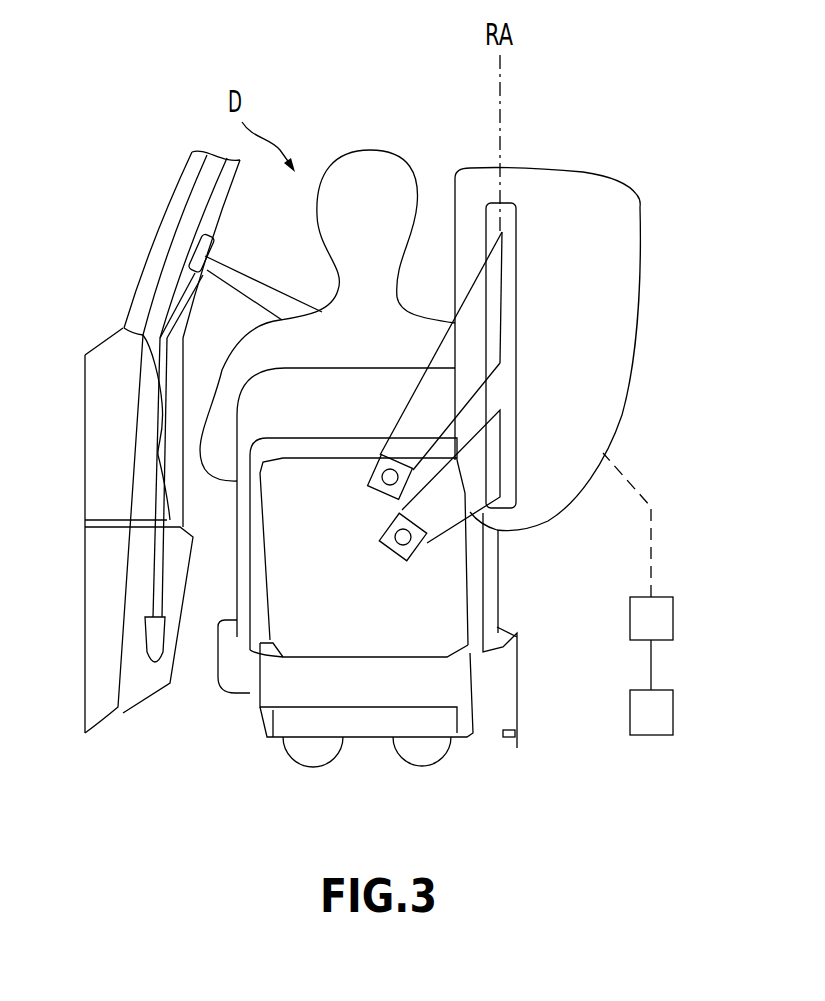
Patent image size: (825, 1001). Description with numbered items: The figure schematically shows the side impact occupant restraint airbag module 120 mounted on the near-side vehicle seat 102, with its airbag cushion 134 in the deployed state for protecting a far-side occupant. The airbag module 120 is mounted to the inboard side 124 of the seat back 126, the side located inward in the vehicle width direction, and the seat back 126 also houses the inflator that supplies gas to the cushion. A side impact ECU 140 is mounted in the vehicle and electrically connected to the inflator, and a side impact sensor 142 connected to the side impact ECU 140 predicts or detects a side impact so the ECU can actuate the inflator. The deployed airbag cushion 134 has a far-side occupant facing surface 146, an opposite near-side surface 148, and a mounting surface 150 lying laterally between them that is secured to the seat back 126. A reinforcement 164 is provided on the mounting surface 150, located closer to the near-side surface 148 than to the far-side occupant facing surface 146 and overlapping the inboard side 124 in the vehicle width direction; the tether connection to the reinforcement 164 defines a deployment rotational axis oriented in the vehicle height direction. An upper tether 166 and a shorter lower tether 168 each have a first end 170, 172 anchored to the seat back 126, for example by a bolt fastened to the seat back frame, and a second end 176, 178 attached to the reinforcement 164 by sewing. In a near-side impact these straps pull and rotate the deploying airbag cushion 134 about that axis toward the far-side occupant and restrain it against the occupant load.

The near-side vehicle seat 102 is at (360, 766).
The airbag module 120 is at (589, 133).
The inboard side 124 is at (498, 570).
The seat back 126 is at (307, 628).
The airbag cushion 134 is at (623, 350).
The side impact ECU 140 is at (673, 617).
The side impact sensor 142 is at (673, 713).
The far-side occupant facing surface 146 is at (640, 273).
The near-side surface 148 is at (455, 250).
The mounting surface 150 is at (587, 220).
The reinforcement 164 is at (500, 390).
The upper tether 166 is at (435, 400).
The lower tether 168 is at (445, 500).
The first end of upper tether 170 is at (373, 477).
The first end of lower tether 172 is at (410, 553).
The second end of upper tether 176 is at (500, 290).
The second end of lower tether 178 is at (500, 452).